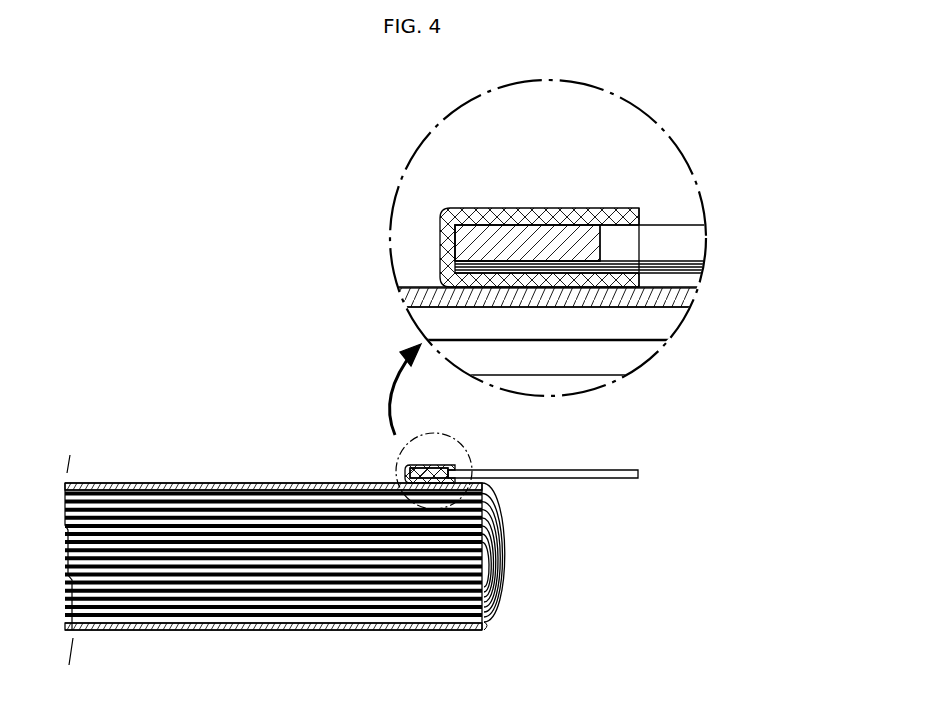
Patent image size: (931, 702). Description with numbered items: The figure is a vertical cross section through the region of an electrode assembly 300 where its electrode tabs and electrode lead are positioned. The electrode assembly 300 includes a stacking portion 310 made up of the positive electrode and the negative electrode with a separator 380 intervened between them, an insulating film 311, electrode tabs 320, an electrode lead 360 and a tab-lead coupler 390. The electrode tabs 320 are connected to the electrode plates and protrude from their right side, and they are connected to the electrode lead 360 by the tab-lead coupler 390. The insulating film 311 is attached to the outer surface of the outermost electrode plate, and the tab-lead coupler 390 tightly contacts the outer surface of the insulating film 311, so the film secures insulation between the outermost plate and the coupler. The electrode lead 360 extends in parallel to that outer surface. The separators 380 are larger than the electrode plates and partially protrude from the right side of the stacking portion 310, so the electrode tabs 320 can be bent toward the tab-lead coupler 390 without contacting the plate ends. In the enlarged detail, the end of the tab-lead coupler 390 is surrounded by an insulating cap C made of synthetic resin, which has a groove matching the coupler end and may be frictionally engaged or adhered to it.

The electrode assembly 300 is at (123, 345).
The stacking portion 310 is at (198, 447).
The insulating film 311 is at (262, 484).
The electrode tabs 320 is at (521, 558).
The electrode lead 360 is at (609, 468).
The separator 380 is at (487, 621).
The tab-lead coupler 390 is at (407, 469).
The insulating cap C is at (477, 215).